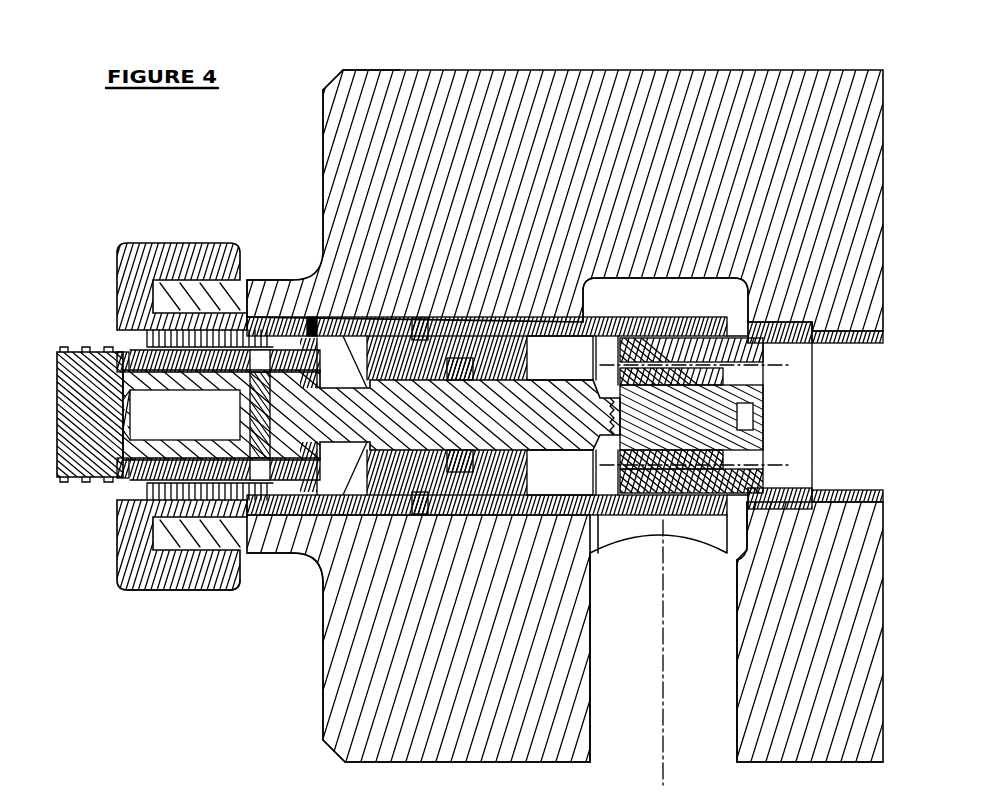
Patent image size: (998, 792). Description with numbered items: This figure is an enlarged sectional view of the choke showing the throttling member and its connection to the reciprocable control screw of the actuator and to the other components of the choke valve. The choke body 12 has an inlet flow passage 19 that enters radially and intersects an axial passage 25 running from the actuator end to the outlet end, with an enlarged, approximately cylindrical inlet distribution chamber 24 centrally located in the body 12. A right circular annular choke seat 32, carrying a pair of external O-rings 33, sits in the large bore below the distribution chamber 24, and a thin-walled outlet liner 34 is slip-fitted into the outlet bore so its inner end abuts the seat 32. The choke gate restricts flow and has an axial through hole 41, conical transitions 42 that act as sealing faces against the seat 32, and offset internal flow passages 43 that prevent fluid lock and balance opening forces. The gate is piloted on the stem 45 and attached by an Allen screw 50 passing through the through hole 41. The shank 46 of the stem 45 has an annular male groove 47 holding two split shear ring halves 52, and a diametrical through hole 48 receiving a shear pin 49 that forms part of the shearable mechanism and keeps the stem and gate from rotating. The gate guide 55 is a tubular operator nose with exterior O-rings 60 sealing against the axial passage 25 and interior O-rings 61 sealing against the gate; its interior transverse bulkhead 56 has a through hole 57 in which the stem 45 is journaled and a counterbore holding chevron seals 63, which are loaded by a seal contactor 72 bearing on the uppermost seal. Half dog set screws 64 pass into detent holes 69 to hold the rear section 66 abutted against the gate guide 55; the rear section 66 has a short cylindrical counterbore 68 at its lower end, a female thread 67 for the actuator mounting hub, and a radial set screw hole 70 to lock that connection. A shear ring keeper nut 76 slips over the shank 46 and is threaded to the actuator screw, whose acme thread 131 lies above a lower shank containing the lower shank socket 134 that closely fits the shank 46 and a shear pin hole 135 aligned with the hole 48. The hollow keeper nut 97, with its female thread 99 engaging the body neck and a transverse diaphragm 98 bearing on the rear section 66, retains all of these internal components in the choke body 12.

The body 12 is at (860, 70).
The inlet flow passage 19 is at (740, 730).
The inlet distribution chamber 24 is at (678, 320).
The axial passage 25 is at (862, 330).
The choke seat 32 is at (763, 322).
The O-rings 33 is at (790, 322).
The outlet liner 34 is at (812, 343).
The axial through hole 41 is at (813, 503).
The conical transitions 42 is at (833, 343).
The internal flow passages 43 is at (580, 317).
The stem 45 is at (434, 70).
The shank 46 is at (372, 383).
The annular male groove 47 is at (255, 300).
The diametrical through hole 48 is at (118, 505).
The shear pin 49 is at (118, 483).
The Allen screw 50 is at (890, 408).
The split shear ring halves 52 is at (278, 530).
The gate guide 55 is at (597, 518).
The interior transverse bulkhead 56 is at (620, 533).
The through hole 57 is at (580, 518).
The O-rings 60 is at (486, 70).
The O-rings 61 is at (623, 317).
The chevron seals 63 is at (344, 762).
The half dog set screws 64 is at (346, 71).
The rear section 66 is at (323, 115).
The female thread 67 is at (128, 592).
The cylindrical counterbore 68 is at (368, 70).
The detent holes 69 is at (320, 582).
The radial set screw hole 70 is at (312, 317).
The seal contactor 72 is at (323, 732).
The shear ring keeper nut 76 is at (295, 320).
The keeper nut 97 is at (160, 262).
The transverse diaphragm 98 is at (499, 396).
The female thread 99 is at (499, 396).
The acme thread 131 is at (80, 352).
The lower shank socket 134 is at (117, 330).
The shear pin hole 135 is at (125, 588).